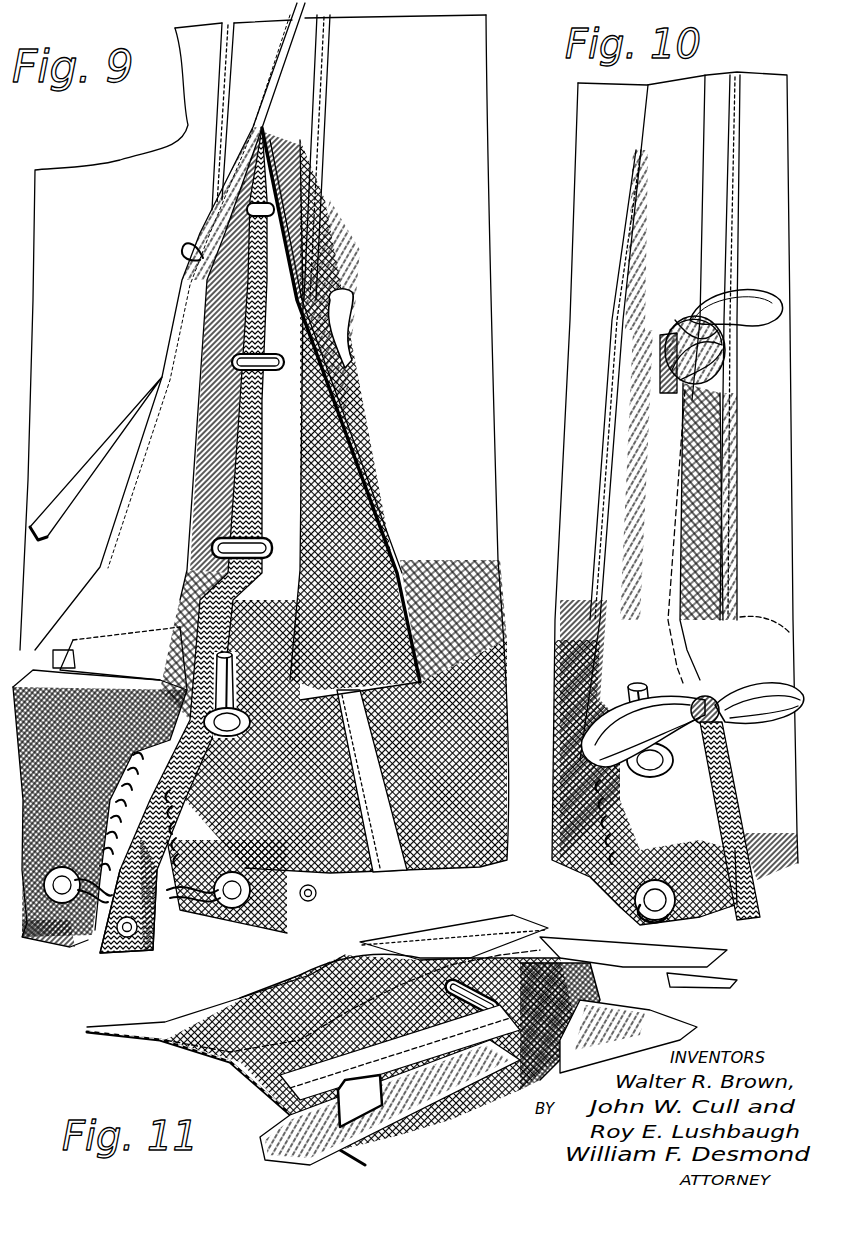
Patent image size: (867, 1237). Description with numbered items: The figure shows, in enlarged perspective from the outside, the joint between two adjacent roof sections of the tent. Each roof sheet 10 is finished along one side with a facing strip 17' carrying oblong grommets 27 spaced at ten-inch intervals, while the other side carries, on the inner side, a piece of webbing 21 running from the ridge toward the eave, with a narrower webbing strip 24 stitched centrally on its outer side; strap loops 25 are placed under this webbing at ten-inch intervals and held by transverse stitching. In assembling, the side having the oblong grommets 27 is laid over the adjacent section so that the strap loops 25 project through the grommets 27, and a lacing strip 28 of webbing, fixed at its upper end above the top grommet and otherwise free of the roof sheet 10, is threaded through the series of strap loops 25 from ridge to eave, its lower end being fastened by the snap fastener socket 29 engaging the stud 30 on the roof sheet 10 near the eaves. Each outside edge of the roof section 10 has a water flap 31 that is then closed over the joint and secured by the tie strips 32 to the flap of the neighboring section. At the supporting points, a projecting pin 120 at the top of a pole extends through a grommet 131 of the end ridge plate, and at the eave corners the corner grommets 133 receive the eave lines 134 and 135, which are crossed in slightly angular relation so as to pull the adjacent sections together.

In FIG. 9, the roof sheet 10 is at (489, 192).
In FIG. 10, the roof sheet 10 is at (583, 287).
In FIG. 11, the roof sheet 10 is at (137, 1027).
In FIG. 9, the facing strip 17' is at (194, 540).
In FIG. 11, the facing strip 17' is at (633, 948).
In FIG. 11, the webbing 21 is at (345, 1172).
In FIG. 11, the webbing strip 24 is at (433, 1080).
In FIG. 9, the strap loops 25 is at (259, 540).
In FIG. 11, the strap loops 25 is at (367, 1080).
In FIG. 9, the oblong grommets 27 is at (270, 385).
In FIG. 11, the oblong grommets 27 is at (526, 1088).
In FIG. 9, the lacing strip 28 is at (240, 750).
In FIG. 10, the lacing strip 28 is at (757, 897).
In FIG. 11, the lacing strip 28 is at (535, 950).
In FIG. 9, the snap fastener socket 29 is at (143, 947).
In FIG. 9, the stud 30 is at (316, 896).
In FIG. 9, the water flap 31 is at (100, 567).
In FIG. 10, the water flap 31 is at (663, 428).
In FIG. 11, the water flap 31 is at (448, 930).
In FIG. 9, the tie strips 32 is at (93, 453).
In FIG. 10, the tie strips 32 is at (765, 683).
In FIG. 11, the tie strips 32 is at (680, 1017).
In FIG. 9, the projecting pin 120 is at (236, 697).
In FIG. 10, the projecting pin 120 is at (655, 672).
In FIG. 9, the grommet 131 is at (250, 725).
In FIG. 10, the grommet 131 is at (645, 780).
In FIG. 9, the corner grommets 133 is at (33, 943).
In FIG. 9, the eave line 134 is at (87, 933).
In FIG. 9, the eave line 135 is at (224, 940).